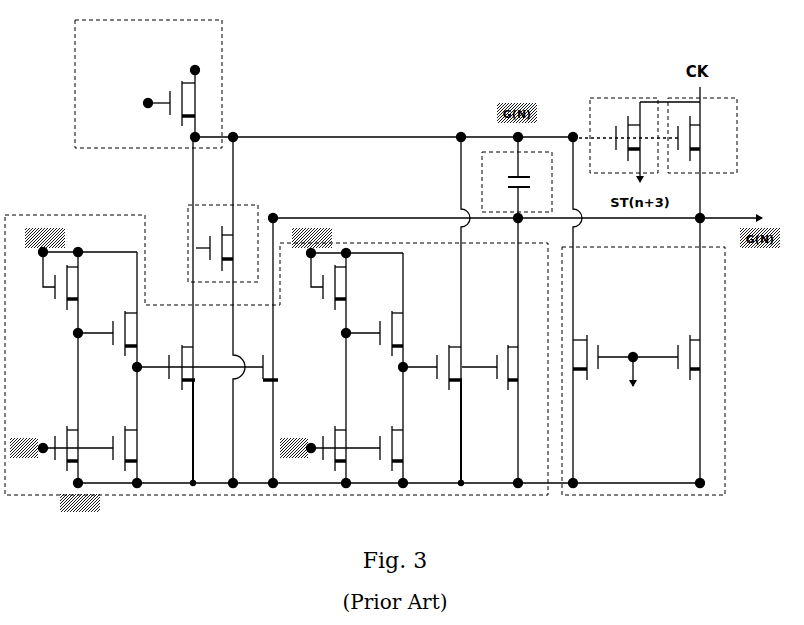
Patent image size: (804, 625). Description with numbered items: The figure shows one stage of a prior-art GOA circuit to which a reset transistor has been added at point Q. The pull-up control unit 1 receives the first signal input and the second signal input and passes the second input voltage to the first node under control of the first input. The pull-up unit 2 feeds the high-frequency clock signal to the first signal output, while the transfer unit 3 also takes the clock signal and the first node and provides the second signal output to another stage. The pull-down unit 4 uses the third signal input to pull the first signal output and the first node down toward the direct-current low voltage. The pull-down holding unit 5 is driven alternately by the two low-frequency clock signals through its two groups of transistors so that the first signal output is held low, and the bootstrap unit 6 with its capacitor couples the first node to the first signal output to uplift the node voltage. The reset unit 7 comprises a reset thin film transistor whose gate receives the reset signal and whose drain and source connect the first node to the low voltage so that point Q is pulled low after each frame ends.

The pull-up control unit 1 is at (224, 62).
The pull-up unit 2 is at (738, 136).
The transfer unit 3 is at (614, 96).
The pull-down unit 4 is at (726, 330).
The pull-down holding unit 5 is at (398, 496).
The bootstrap unit 6 is at (541, 150).
The reset unit 7 is at (246, 204).